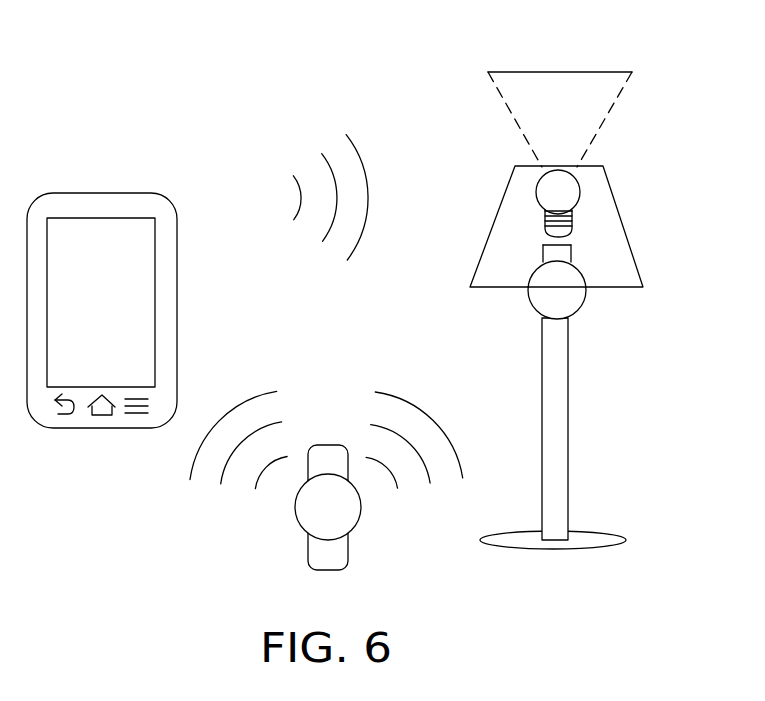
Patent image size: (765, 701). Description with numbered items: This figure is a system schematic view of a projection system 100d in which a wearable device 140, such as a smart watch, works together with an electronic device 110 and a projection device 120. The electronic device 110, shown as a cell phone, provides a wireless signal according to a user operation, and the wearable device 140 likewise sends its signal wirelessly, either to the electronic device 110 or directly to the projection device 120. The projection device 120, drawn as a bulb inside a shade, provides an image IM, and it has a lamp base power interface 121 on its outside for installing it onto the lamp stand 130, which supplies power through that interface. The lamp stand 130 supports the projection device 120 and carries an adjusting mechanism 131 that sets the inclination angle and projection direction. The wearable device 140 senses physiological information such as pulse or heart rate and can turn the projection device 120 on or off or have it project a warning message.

The projection system 100d is at (83, 583).
The electronic device 110 is at (118, 193).
The projection device 120 is at (614, 209).
The lamp base power interface 121 is at (572, 220).
The lamp stand 130 is at (561, 357).
The adjusting mechanism 131 is at (572, 298).
The wearable device 140 is at (327, 445).
The image IM is at (595, 72).